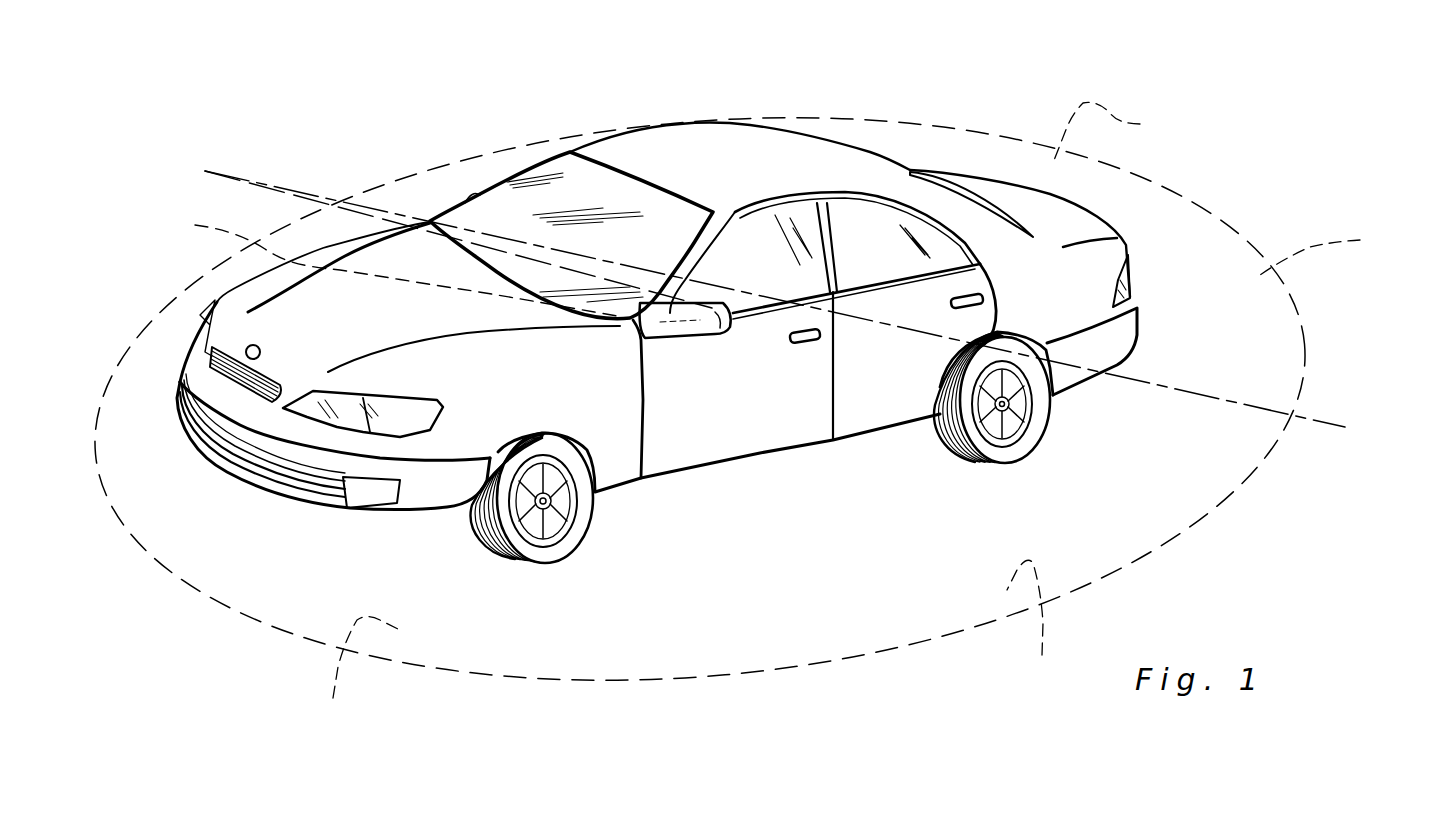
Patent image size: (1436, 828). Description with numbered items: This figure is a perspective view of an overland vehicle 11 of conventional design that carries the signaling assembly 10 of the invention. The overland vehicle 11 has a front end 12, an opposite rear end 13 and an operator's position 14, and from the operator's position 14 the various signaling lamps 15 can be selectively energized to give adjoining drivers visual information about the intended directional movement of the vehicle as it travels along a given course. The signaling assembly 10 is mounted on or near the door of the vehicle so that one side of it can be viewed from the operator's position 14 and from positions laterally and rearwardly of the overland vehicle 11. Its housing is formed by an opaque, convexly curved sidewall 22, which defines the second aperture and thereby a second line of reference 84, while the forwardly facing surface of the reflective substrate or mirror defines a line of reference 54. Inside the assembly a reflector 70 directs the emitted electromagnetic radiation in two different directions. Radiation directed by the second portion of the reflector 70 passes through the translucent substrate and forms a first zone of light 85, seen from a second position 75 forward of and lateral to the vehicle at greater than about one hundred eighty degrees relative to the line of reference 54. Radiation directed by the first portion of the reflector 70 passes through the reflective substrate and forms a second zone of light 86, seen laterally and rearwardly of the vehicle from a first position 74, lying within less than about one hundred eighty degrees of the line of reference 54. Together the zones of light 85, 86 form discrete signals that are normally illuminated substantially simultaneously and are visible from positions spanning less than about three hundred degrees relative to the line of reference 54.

The signaling assembly 10 is at (700, 343).
The overland vehicle 11 is at (817, 443).
The front end 12 is at (278, 363).
The rear end 13 is at (1062, 212).
The operator's position 14 is at (517, 265).
The signaling lamps 15 is at (415, 418).
The convexly curved sidewall 22 is at (707, 323).
The line of reference 54 is at (298, 196).
The reflector 70 is at (758, 423).
The first position 74 is at (1115, 132).
The second position 75 is at (1031, 624).
The second line of reference 84 is at (196, 225).
The first zone of light 85 is at (357, 673).
The second zone of light 86 is at (1328, 251).